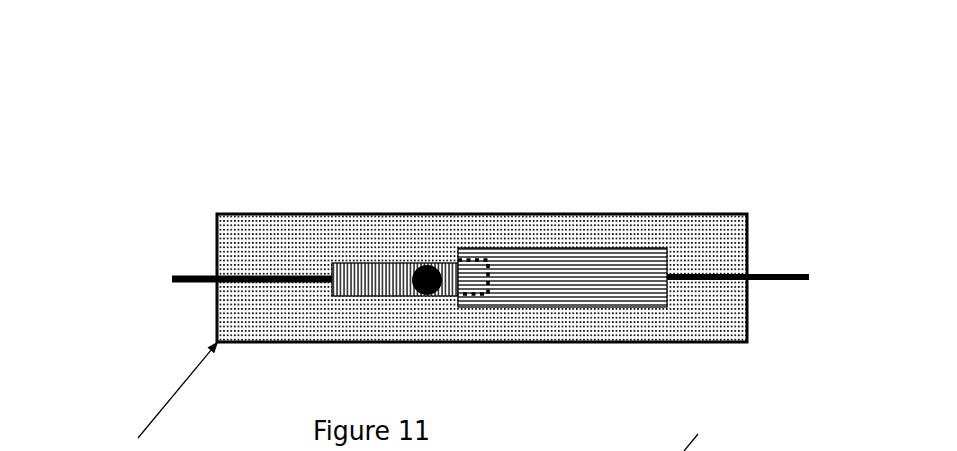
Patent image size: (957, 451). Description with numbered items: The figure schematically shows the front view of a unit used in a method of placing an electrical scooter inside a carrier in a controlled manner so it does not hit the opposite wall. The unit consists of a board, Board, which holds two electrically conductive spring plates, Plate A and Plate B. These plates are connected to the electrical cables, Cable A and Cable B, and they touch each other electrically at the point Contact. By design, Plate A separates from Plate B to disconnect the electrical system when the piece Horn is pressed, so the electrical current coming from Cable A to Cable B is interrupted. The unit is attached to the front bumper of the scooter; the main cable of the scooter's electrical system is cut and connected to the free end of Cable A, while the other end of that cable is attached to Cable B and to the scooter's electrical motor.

The board Board is at (310, 207).
The cable Cable A is at (203, 271).
The spring plate Plate A is at (349, 254).
The horn Horn is at (429, 251).
The spring plate Plate B is at (586, 236).
The contact point Contact is at (490, 299).
The cable Cable B is at (778, 249).